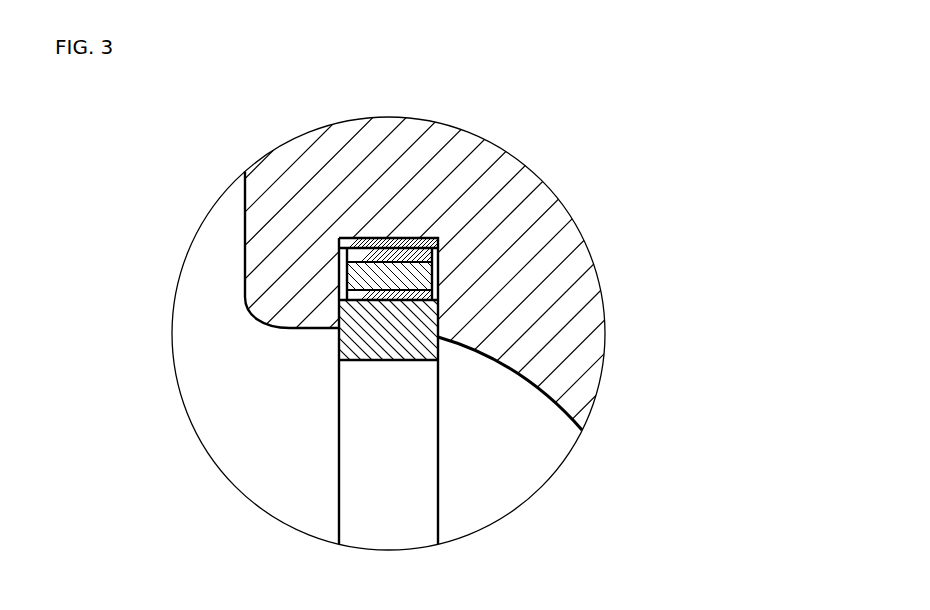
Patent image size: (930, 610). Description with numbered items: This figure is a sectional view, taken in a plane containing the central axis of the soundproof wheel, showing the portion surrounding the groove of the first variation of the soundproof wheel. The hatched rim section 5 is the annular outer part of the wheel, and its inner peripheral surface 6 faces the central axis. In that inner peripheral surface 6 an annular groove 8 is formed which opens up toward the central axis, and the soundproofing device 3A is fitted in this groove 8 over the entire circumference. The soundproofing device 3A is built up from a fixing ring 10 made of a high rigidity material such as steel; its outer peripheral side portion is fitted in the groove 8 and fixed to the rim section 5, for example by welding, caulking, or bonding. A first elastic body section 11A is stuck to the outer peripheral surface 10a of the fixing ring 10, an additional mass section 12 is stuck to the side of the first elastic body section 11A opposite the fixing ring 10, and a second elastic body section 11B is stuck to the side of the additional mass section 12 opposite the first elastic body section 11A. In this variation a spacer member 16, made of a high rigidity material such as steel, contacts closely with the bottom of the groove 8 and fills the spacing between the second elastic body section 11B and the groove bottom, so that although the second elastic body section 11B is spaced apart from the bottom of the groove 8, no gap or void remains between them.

The soundproofing device 3A is at (280, 308).
The rim section 5 is at (510, 192).
The inner peripheral surface 6 is at (494, 363).
The groove 8 is at (390, 240).
The fixing ring 10 is at (339, 347).
The outer peripheral surface 10a is at (369, 300).
The first elastic body section 11A is at (350, 297).
The second elastic body section 11B is at (347, 258).
The additional mass section 12 is at (356, 275).
The spacer member 16 is at (339, 240).